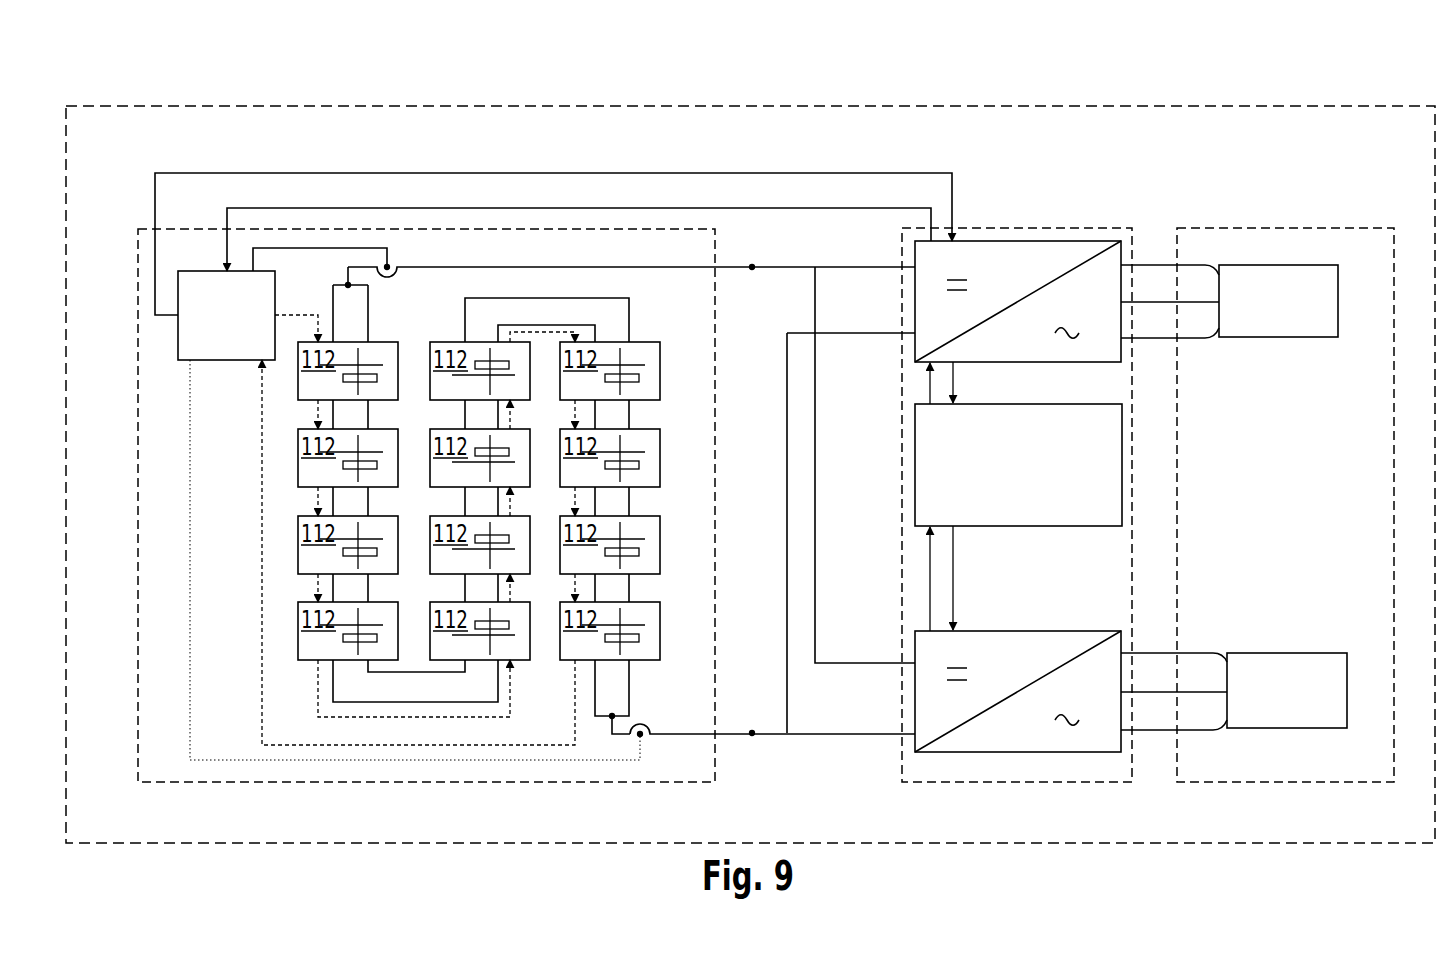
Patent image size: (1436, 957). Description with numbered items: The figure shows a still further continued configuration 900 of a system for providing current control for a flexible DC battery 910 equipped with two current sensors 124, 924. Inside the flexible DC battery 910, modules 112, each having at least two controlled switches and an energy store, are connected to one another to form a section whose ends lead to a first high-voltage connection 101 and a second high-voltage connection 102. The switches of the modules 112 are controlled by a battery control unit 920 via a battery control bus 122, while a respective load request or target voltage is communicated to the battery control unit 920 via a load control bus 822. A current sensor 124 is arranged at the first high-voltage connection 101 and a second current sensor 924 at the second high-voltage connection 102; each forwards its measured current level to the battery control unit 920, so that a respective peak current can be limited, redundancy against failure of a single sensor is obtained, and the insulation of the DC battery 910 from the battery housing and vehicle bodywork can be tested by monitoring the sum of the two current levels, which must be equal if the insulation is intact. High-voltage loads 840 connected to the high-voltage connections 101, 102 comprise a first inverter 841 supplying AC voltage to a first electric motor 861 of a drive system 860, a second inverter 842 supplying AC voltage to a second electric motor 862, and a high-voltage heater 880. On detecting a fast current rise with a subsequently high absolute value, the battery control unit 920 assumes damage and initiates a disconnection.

The configuration 900 is at (140, 95).
The flexible DC battery 910 is at (702, 793).
The battery control unit 920 is at (248, 330).
The load control bus 822 is at (563, 170).
The current sensor 124 is at (396, 285).
The current sensor 924 is at (652, 716).
The module 112 is at (479, 500).
The battery control bus 122 is at (302, 324).
The first high-voltage connection 101 is at (751, 279).
The second high-voltage connection 102 is at (751, 721).
The high-voltage loads 840 is at (1053, 221).
The first inverter 841 is at (1040, 282).
The second inverter 842 is at (1040, 667).
The high-voltage heater 880 is at (1041, 480).
The drive system 860 is at (1299, 221).
The first electric motor 861 is at (1302, 315).
The second electric motor 862 is at (1310, 705).